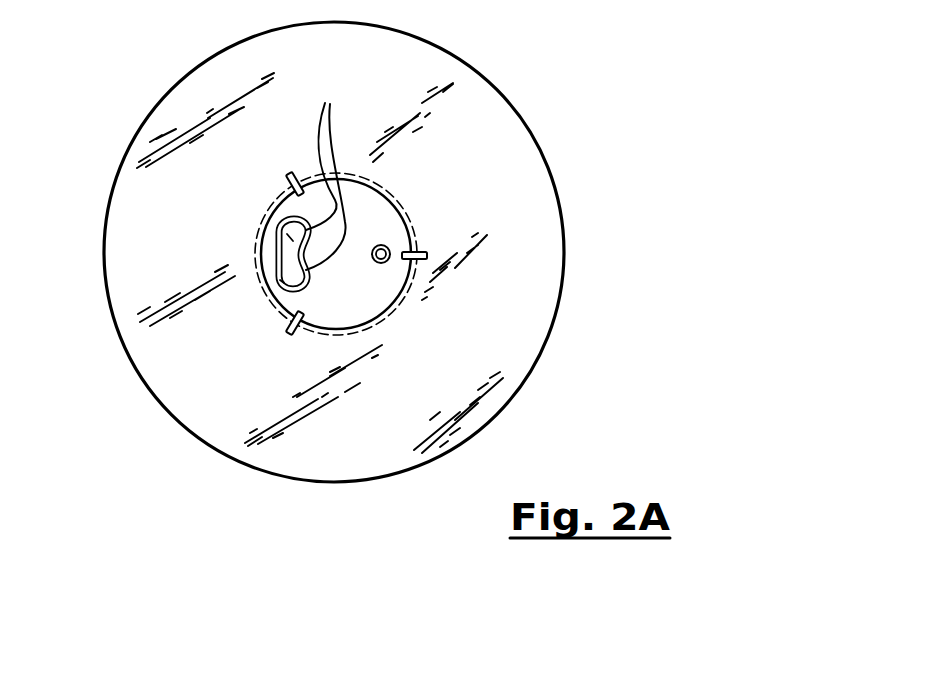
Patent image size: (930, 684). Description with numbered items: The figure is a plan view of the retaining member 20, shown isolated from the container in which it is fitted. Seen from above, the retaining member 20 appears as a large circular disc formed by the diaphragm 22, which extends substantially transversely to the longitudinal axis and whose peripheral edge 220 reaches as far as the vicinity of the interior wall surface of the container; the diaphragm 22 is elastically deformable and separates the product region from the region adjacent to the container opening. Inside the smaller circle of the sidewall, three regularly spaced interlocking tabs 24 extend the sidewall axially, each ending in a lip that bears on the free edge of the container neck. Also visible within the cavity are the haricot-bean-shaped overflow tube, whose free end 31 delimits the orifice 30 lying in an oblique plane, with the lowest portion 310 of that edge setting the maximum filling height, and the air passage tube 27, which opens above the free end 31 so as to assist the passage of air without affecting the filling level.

The retaining member 20 is at (536, 78).
The diaphragm 22 is at (520, 203).
The peripheral edge 220 is at (562, 292).
The interlocking tabs 24 is at (289, 187).
The air passage tube 27 is at (383, 263).
The orifice 30 is at (280, 229).
The free end 31 is at (280, 280).
The lowest portion 310 is at (333, 170).